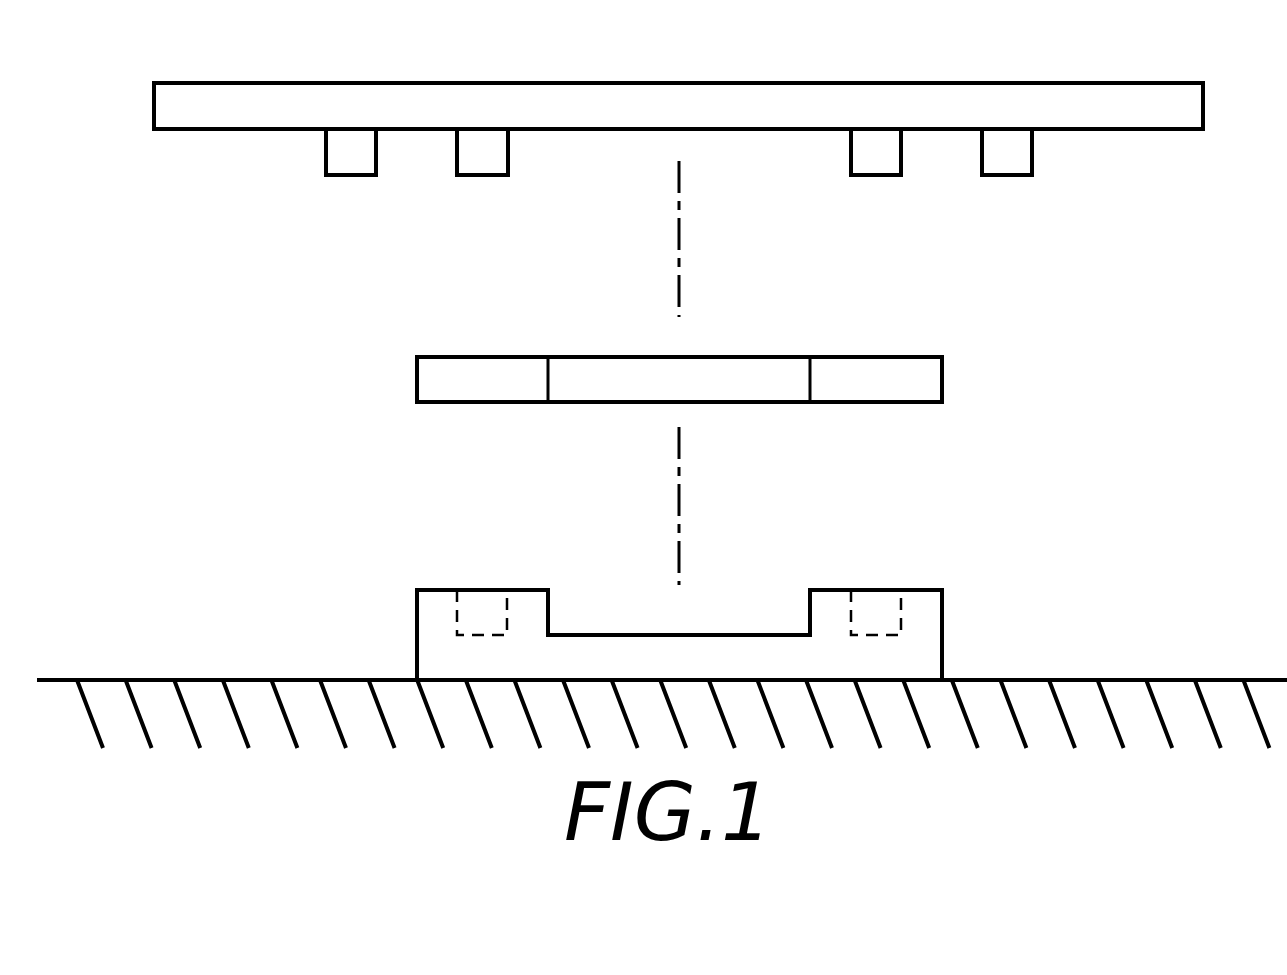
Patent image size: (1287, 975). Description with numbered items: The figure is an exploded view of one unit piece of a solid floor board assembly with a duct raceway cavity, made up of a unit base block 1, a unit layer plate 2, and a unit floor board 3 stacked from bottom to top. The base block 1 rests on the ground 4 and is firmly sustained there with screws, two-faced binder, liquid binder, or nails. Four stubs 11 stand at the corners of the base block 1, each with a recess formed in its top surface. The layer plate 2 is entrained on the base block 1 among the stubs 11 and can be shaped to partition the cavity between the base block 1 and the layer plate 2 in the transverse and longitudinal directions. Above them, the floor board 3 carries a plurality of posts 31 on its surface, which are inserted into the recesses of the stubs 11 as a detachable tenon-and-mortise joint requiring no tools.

The unit base block 1 is at (415, 610).
The stubs 11 is at (917, 595).
The unit layer plate 2 is at (421, 387).
The unit floor board 3 is at (511, 81).
The posts 31 is at (1025, 163).
The ground / support surface 4 is at (1082, 687).